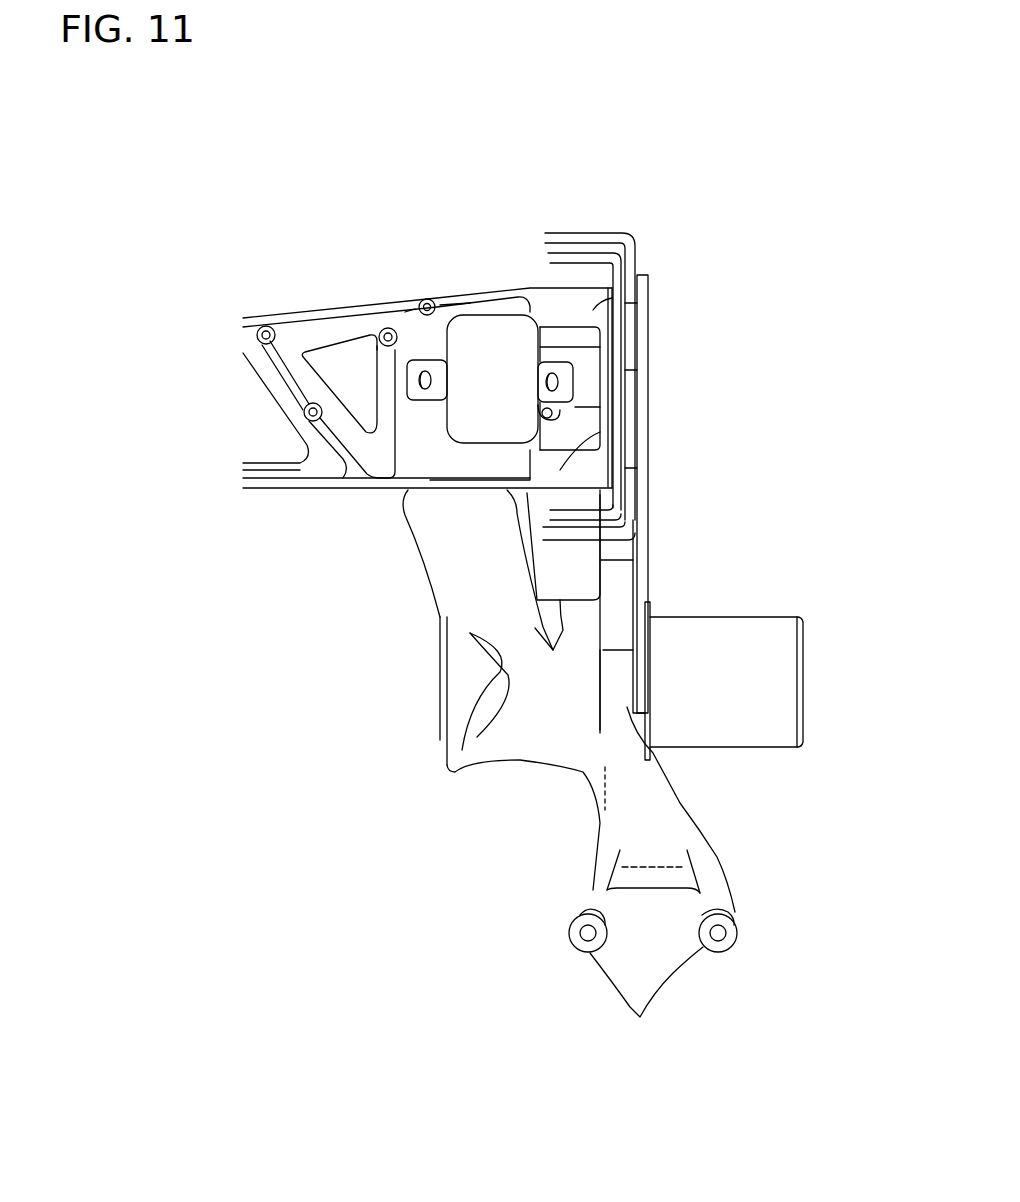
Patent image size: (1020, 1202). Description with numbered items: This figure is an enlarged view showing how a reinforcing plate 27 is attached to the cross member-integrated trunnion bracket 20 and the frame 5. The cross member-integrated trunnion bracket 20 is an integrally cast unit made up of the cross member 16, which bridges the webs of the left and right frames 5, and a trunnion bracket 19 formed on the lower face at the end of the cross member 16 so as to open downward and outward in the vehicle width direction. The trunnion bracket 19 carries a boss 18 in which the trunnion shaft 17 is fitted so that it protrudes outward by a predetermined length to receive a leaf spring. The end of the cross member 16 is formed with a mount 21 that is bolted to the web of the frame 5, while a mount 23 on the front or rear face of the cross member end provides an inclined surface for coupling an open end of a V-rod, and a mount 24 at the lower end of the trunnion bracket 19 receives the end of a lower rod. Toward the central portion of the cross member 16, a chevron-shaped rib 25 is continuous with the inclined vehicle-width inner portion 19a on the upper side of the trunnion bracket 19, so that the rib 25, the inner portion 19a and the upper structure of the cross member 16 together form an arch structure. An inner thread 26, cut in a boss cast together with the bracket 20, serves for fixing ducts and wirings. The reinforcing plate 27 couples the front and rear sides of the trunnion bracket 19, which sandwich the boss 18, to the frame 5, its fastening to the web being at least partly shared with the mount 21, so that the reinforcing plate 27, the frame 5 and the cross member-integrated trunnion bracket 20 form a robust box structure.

The frame 5 is at (618, 235).
The cross member 16 is at (322, 302).
The trunnion shaft 17 is at (758, 642).
The boss 18 is at (518, 747).
The trunnion bracket 19 is at (688, 797).
The vehicle-width inner portion 19a is at (422, 567).
The cross member-integrated trunnion bracket 20 is at (482, 211).
The mount 21 is at (593, 310).
The mount 23 is at (430, 446).
The mount 24 is at (653, 979).
The rib 25 is at (297, 330).
The inner thread 26 is at (318, 404).
The reinforcing plate 27 is at (648, 470).